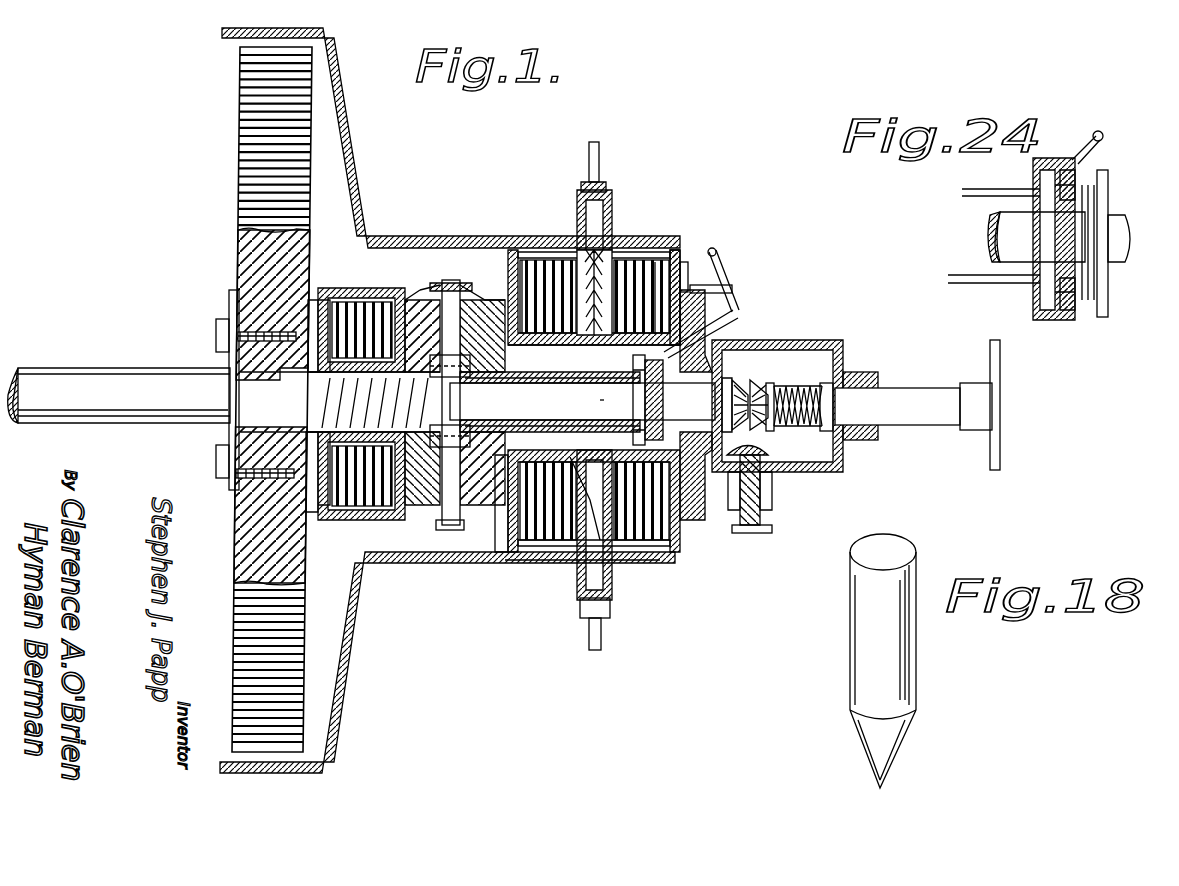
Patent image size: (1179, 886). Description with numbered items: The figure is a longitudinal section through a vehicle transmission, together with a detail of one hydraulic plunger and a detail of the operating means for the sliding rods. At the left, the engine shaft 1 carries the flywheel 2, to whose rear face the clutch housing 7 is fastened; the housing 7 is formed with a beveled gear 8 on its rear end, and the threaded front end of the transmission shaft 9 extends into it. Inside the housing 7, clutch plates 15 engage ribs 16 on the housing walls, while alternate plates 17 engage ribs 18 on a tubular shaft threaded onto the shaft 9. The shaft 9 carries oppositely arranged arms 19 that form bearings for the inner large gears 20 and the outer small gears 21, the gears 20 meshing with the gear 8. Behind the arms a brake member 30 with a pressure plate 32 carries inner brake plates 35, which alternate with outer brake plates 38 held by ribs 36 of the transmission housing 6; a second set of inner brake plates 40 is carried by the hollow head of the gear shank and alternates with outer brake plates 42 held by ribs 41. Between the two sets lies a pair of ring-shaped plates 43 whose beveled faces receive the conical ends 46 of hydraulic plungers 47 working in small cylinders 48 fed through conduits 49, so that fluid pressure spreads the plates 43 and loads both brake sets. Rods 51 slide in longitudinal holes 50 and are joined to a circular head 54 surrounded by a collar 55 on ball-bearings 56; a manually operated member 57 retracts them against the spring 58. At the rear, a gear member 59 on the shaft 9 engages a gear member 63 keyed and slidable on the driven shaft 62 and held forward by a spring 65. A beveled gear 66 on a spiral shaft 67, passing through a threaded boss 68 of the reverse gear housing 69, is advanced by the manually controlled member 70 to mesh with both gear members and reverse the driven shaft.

In FIG. 1, the engine shaft 1 is at (142, 368).
In FIG. 1, the flywheel 2 is at (238, 255).
In FIG. 1, the transmission housing 6 is at (352, 140).
In FIG. 1, the clutch housing 7 is at (388, 292).
In FIG. 1, the beveled gear 8 is at (408, 300).
In FIG. 1, the transmission shaft 9 is at (582, 402).
In FIG. 24, the transmission shaft 9 is at (990, 228).
In FIG. 1, the clutch plates 15 is at (320, 290).
In FIG. 1, the ribs 16 is at (312, 225).
In FIG. 1, the plates 17 is at (344, 290).
In FIG. 1, the ribs 18 is at (330, 385).
In FIG. 1, the arms 19 is at (472, 300).
In FIG. 1, the inner large gears 20 is at (470, 380).
In FIG. 1, the outer small gears 21 is at (446, 282).
In FIG. 1, the brake member 30 is at (546, 552).
In FIG. 1, the plate 32 is at (500, 545).
In FIG. 1, the inner brake plates 35 is at (542, 262).
In FIG. 1, the ribs 36 is at (520, 255).
In FIG. 1, the outer brake plates 38 is at (522, 258).
In FIG. 1, the inner brake plates 40 is at (655, 262).
In FIG. 1, the ribs 41 is at (676, 258).
In FIG. 1, the outer brake plates 42 is at (690, 262).
In FIG. 1, the ring-shaped plates 43 is at (583, 560).
In FIG. 18, the conical ends 46 is at (860, 740).
In FIG. 1, the hydraulic plungers 47 is at (606, 240).
In FIG. 18, the hydraulic plungers 47 is at (850, 632).
In FIG. 1, the small cylinders 48 is at (606, 188).
In FIG. 1, the conduits 49 is at (585, 640).
In FIG. 1, the longitudinally extending holes 50 is at (510, 555).
In FIG. 1, the rods 51 is at (560, 372).
In FIG. 24, the rods 51 is at (962, 192).
In FIG. 24, the circular head 54 is at (1040, 290).
In FIG. 24, the collar 55 is at (1075, 320).
In FIG. 24, the ball-bearings 56 is at (1080, 175).
In FIG. 1, the manually operated member 57 is at (634, 400).
In FIG. 24, the manually operated member 57 is at (1094, 128).
In FIG. 1, the spring 58 is at (660, 385).
In FIG. 24, the spring 58 is at (1100, 198).
In FIG. 1, the gear member 59 is at (738, 373).
In FIG. 1, the driven shaft 62 is at (920, 428).
In FIG. 1, the gear member 63 is at (768, 385).
In FIG. 1, the spring 65 is at (800, 390).
In FIG. 1, the beveled gear 66 is at (765, 446).
In FIG. 1, the spiral shaft 67 is at (760, 505).
In FIG. 1, the threaded boss 68 is at (735, 490).
In FIG. 1, the reverse gear housing 69 is at (770, 340).
In FIG. 1, the manually controlled member 70 is at (772, 529).